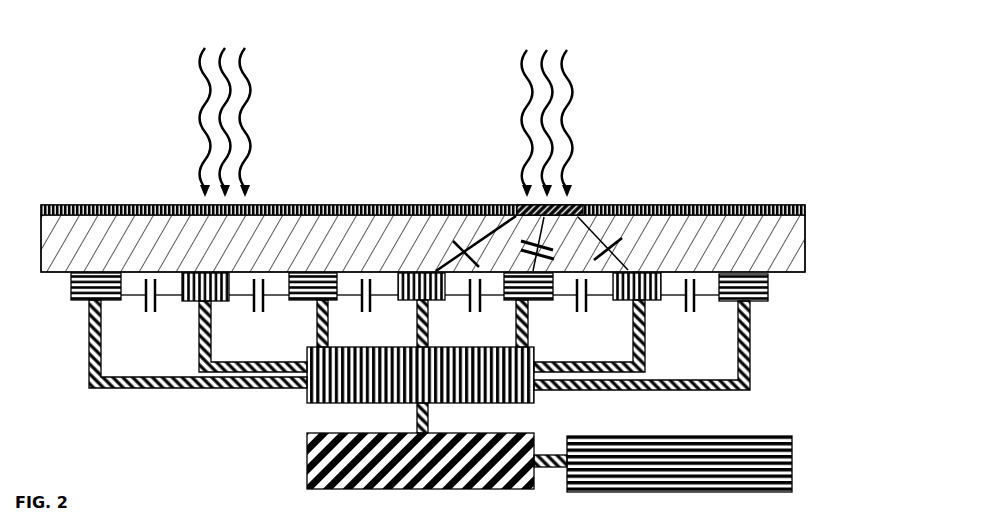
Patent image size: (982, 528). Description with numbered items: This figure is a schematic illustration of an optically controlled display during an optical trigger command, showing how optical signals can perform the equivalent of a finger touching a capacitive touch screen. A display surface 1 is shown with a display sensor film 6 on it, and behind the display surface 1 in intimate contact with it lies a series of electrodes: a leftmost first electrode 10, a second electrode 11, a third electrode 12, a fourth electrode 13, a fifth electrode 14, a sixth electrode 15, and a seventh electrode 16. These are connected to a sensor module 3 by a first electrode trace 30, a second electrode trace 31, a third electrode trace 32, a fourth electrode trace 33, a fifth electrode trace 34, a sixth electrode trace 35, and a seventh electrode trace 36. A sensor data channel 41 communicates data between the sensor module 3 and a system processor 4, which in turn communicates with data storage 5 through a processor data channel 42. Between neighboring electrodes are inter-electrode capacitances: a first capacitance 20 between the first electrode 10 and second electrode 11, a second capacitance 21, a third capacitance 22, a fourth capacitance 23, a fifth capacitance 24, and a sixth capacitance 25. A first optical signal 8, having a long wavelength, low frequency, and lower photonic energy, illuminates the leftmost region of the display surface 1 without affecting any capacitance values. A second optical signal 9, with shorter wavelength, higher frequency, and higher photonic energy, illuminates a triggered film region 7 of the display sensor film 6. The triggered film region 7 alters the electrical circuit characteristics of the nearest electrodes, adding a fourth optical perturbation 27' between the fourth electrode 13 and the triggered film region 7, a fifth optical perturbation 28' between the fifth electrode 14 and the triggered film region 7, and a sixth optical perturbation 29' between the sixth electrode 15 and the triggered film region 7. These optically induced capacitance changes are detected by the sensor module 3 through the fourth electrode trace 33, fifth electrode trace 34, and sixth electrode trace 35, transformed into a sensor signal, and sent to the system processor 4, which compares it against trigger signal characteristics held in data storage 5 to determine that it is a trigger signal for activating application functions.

The display surface 1 is at (50, 243).
The sensor module 3 is at (320, 392).
The system processor 4 is at (317, 467).
The data storage 5 is at (627, 440).
The display sensor film 6 is at (337, 205).
The triggered film region 7 is at (580, 210).
The first optical signal 8 is at (213, 131).
The second optical signal 9 is at (530, 121).
The first electrode 10 is at (83, 295).
The second electrode 11 is at (195, 297).
The third electrode 12 is at (307, 297).
The fourth electrode 13 is at (412, 293).
The fifth electrode 14 is at (513, 297).
The sixth electrode 15 is at (627, 296).
The seventh electrode 16 is at (733, 297).
The first capacitance 20 is at (147, 305).
The second capacitance 21 is at (257, 303).
The third capacitance 22 is at (365, 297).
The fourth capacitance 23 is at (475, 302).
The fifth capacitance 24 is at (578, 303).
The sixth capacitance 25 is at (688, 303).
The fourth optical perturbation 27' is at (473, 225).
The fifth optical perturbation 28' is at (515, 224).
The sixth optical perturbation 29' is at (616, 223).
The first electrode trace 30 is at (93, 360).
The second electrode trace 31 is at (200, 352).
The third electrode trace 32 is at (317, 333).
The fourth electrode trace 33 is at (422, 323).
The fifth electrode trace 34 is at (527, 333).
The sixth electrode trace 35 is at (640, 348).
The seventh electrode trace 36 is at (733, 385).
The sensor data channel 41 is at (420, 408).
The processor data channel 42 is at (560, 458).